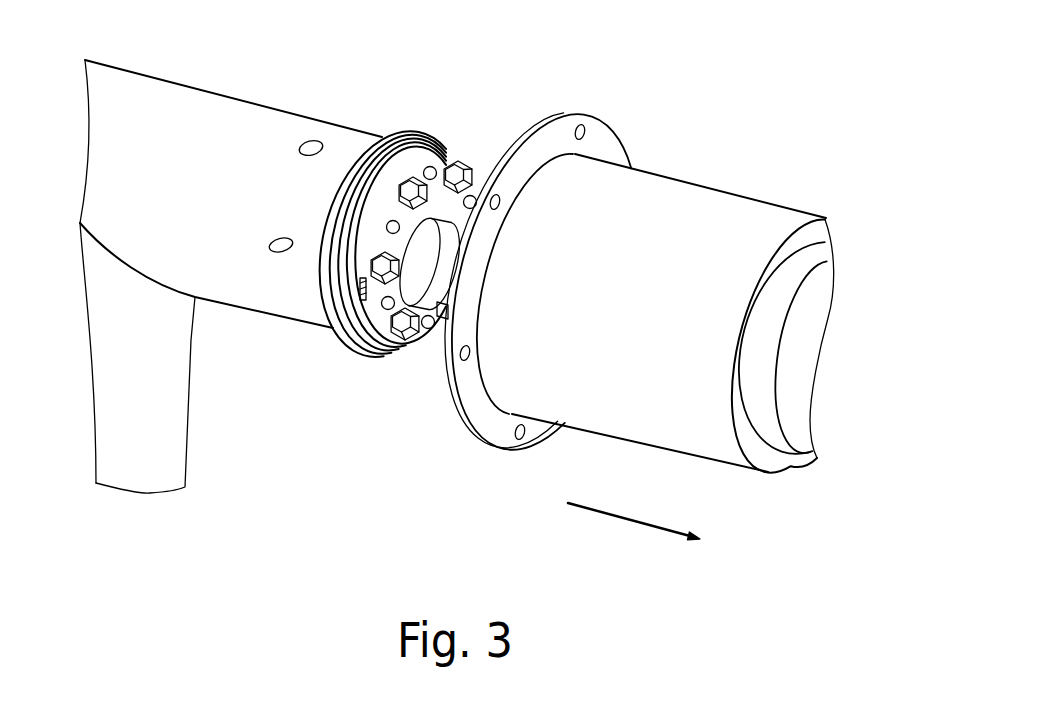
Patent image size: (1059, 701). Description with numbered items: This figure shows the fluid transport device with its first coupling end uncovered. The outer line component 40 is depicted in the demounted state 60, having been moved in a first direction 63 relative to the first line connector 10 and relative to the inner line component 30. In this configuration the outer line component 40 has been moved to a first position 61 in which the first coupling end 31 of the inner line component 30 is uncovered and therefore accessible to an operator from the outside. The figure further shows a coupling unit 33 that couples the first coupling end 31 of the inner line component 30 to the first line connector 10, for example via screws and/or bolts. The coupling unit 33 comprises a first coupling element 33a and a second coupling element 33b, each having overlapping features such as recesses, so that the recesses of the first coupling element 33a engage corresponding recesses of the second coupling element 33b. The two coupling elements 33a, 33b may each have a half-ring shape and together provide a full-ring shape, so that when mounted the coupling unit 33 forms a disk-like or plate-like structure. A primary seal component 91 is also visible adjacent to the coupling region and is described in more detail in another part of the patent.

The first line connector 10 is at (162, 120).
The primary seal component 91 is at (356, 156).
The inner line component 30 is at (383, 336).
The first coupling end 31 is at (433, 222).
The coupling unit 33 is at (418, 168).
The first coupling element 33a is at (390, 242).
The second coupling element 33b is at (428, 262).
The outer line component 40 is at (708, 237).
The demounted state 60 is at (687, 113).
The first position 61 is at (525, 284).
The first direction 63 is at (630, 523).